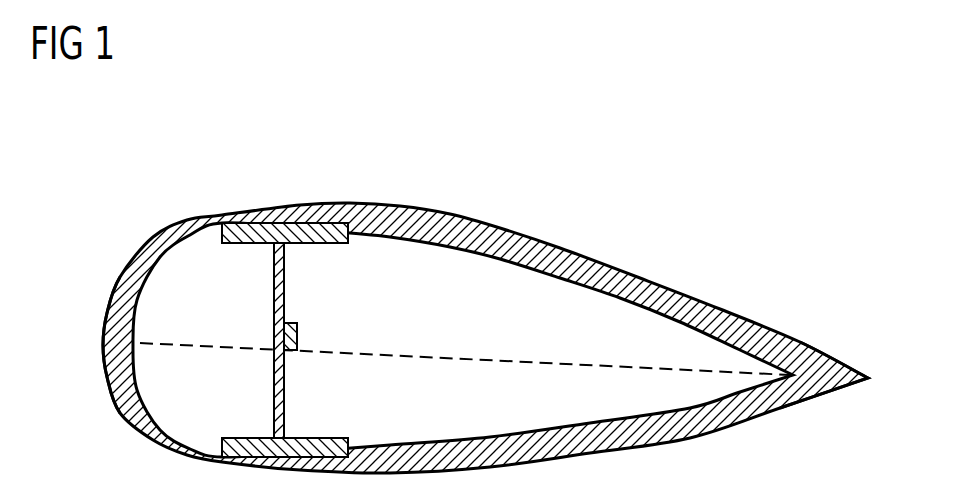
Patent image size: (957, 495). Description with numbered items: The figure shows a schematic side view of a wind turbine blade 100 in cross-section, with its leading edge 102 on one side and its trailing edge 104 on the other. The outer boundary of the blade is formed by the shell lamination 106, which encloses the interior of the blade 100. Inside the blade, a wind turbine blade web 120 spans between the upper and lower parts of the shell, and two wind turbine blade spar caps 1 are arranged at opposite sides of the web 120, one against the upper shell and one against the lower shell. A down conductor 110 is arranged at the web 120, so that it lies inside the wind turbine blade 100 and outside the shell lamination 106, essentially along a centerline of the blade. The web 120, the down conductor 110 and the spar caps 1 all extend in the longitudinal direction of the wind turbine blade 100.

The wind turbine blade 100 is at (466, 295).
The leading edge 102 is at (106, 338).
The trailing edge 104 is at (870, 382).
The shell lamination 106 is at (590, 262).
The down conductor 110 is at (298, 338).
The wind turbine blade web 120 is at (274, 311).
The wind turbine blade spar caps 1 is at (313, 240).